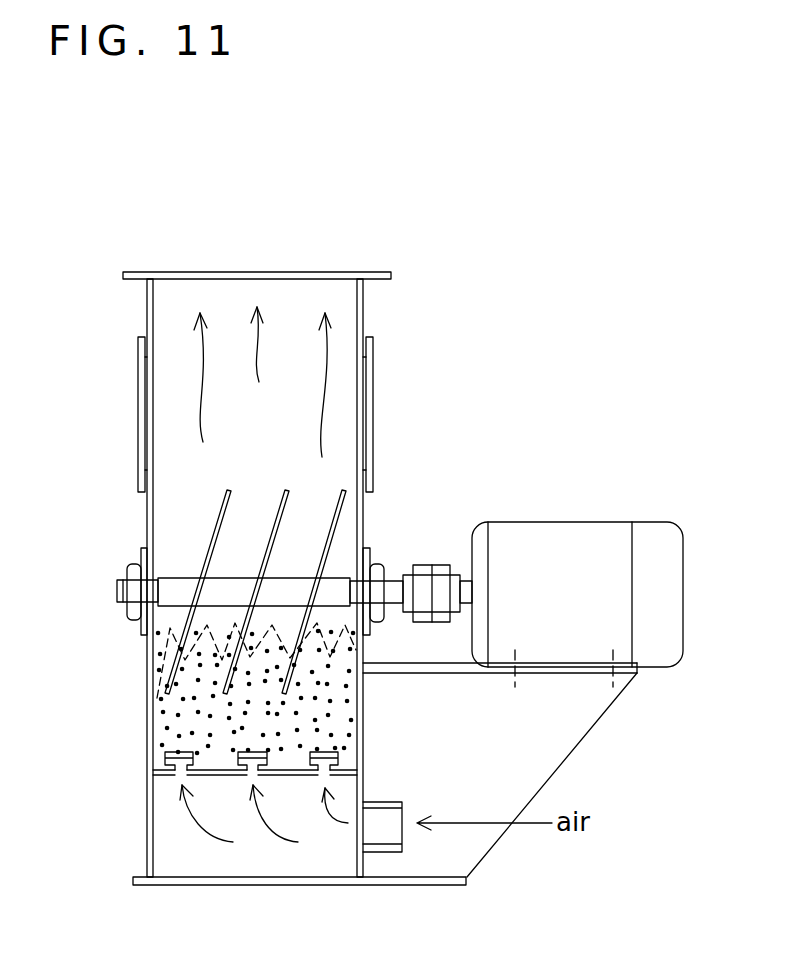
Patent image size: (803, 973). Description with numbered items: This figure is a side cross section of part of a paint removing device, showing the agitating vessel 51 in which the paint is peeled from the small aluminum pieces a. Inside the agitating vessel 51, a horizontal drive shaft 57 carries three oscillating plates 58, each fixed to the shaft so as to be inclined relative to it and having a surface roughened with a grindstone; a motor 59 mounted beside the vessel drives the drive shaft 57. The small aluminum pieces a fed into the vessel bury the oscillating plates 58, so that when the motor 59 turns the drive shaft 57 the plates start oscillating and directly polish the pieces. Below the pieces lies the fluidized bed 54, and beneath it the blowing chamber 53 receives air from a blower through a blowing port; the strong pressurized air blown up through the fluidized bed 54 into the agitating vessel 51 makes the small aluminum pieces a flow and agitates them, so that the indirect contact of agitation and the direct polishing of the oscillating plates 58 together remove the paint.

The agitating vessel 51 is at (352, 272).
The blowing chamber 53 is at (307, 867).
The fluidized bed 54 is at (227, 777).
The drive shaft 57 is at (183, 578).
The oscillating plate 58 is at (220, 503).
The motor 59 is at (578, 522).
The small aluminum pieces a is at (152, 703).